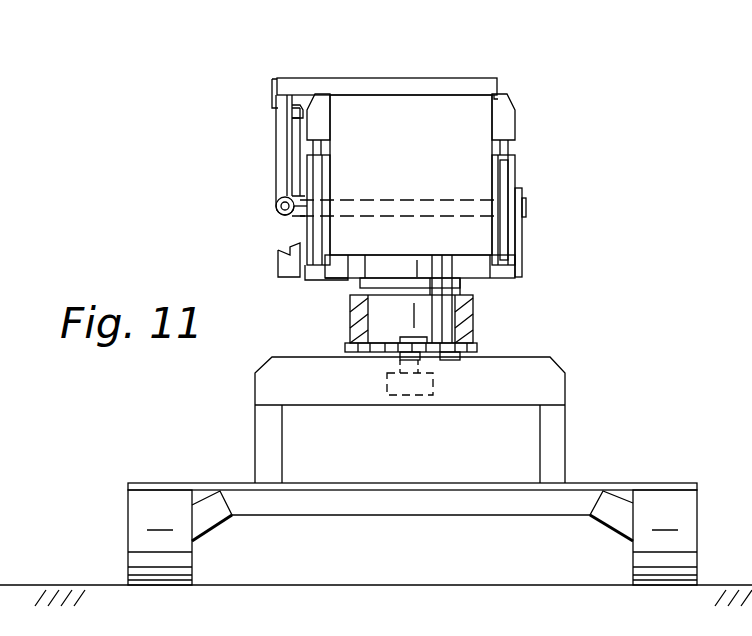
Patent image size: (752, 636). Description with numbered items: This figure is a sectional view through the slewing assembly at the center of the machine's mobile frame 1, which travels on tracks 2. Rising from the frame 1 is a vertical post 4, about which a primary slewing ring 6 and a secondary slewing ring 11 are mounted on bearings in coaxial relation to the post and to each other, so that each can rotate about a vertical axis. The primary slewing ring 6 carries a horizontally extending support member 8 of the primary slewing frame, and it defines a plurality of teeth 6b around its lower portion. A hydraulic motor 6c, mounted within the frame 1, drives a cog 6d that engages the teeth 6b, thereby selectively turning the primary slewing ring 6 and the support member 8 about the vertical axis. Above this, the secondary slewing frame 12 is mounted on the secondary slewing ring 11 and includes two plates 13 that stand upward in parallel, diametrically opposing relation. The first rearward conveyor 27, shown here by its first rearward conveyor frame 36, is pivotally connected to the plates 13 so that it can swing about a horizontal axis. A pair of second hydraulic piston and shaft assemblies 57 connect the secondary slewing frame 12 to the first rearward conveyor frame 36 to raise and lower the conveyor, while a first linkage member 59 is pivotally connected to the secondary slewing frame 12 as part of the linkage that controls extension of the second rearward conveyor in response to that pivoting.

The mobile frame 1 is at (575, 418).
The tracks 2 is at (110, 503).
The post 4 is at (473, 305).
The primary slewing ring 6 is at (490, 343).
The teeth 6b is at (345, 347).
The hydraulic motor 6c is at (387, 393).
The cog 6d is at (403, 337).
The support member 8 is at (475, 324).
The secondary slewing ring 11 is at (296, 290).
The secondary slewing frame 12 is at (535, 259).
The plates 13 is at (519, 237).
The first rearward conveyor 27 is at (384, 65).
The first rearward conveyor frame 36 is at (455, 82).
The second hydraulic piston and shaft assemblies 57 is at (292, 223).
The first linkage member 59 is at (277, 136).